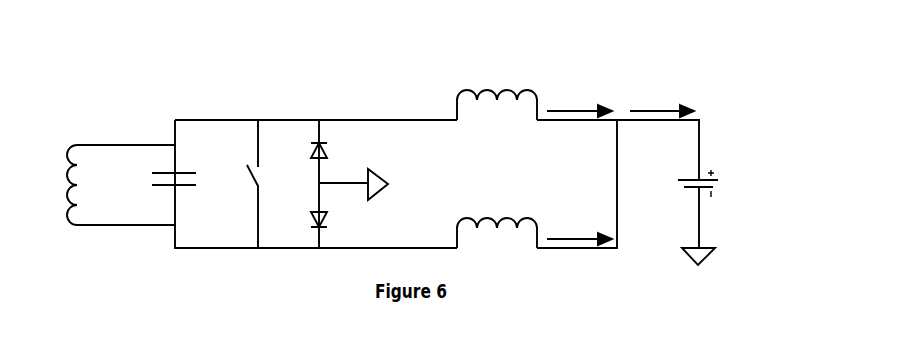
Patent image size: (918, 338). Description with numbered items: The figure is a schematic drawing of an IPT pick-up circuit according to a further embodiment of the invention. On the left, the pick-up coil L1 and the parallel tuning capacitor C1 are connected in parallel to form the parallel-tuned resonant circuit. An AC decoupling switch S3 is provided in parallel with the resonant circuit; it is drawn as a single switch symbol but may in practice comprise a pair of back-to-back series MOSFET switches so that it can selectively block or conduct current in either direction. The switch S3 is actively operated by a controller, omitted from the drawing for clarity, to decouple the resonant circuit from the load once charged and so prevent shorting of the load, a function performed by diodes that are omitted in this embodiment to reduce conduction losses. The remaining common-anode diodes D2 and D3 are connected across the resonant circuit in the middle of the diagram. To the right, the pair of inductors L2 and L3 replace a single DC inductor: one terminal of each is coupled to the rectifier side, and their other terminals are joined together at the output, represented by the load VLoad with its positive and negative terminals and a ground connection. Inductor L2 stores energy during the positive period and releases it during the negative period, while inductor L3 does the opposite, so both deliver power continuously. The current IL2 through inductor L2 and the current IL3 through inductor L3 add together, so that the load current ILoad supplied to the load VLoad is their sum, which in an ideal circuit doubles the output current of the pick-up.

The pick-up coil L1 is at (107, 185).
The parallel tuning capacitor C1 is at (160, 184).
The AC decoupling switch S3 is at (240, 184).
The common-anode diode D2 is at (337, 154).
The common-anode diode D3 is at (337, 222).
The inductor L2 is at (497, 88).
The inductor L3 is at (497, 218).
The current through inductor L2 IL2 is at (579, 95).
The load current ILoad is at (662, 95).
The current through inductor L3 IL3 is at (579, 224).
The load VLoad is at (733, 184).